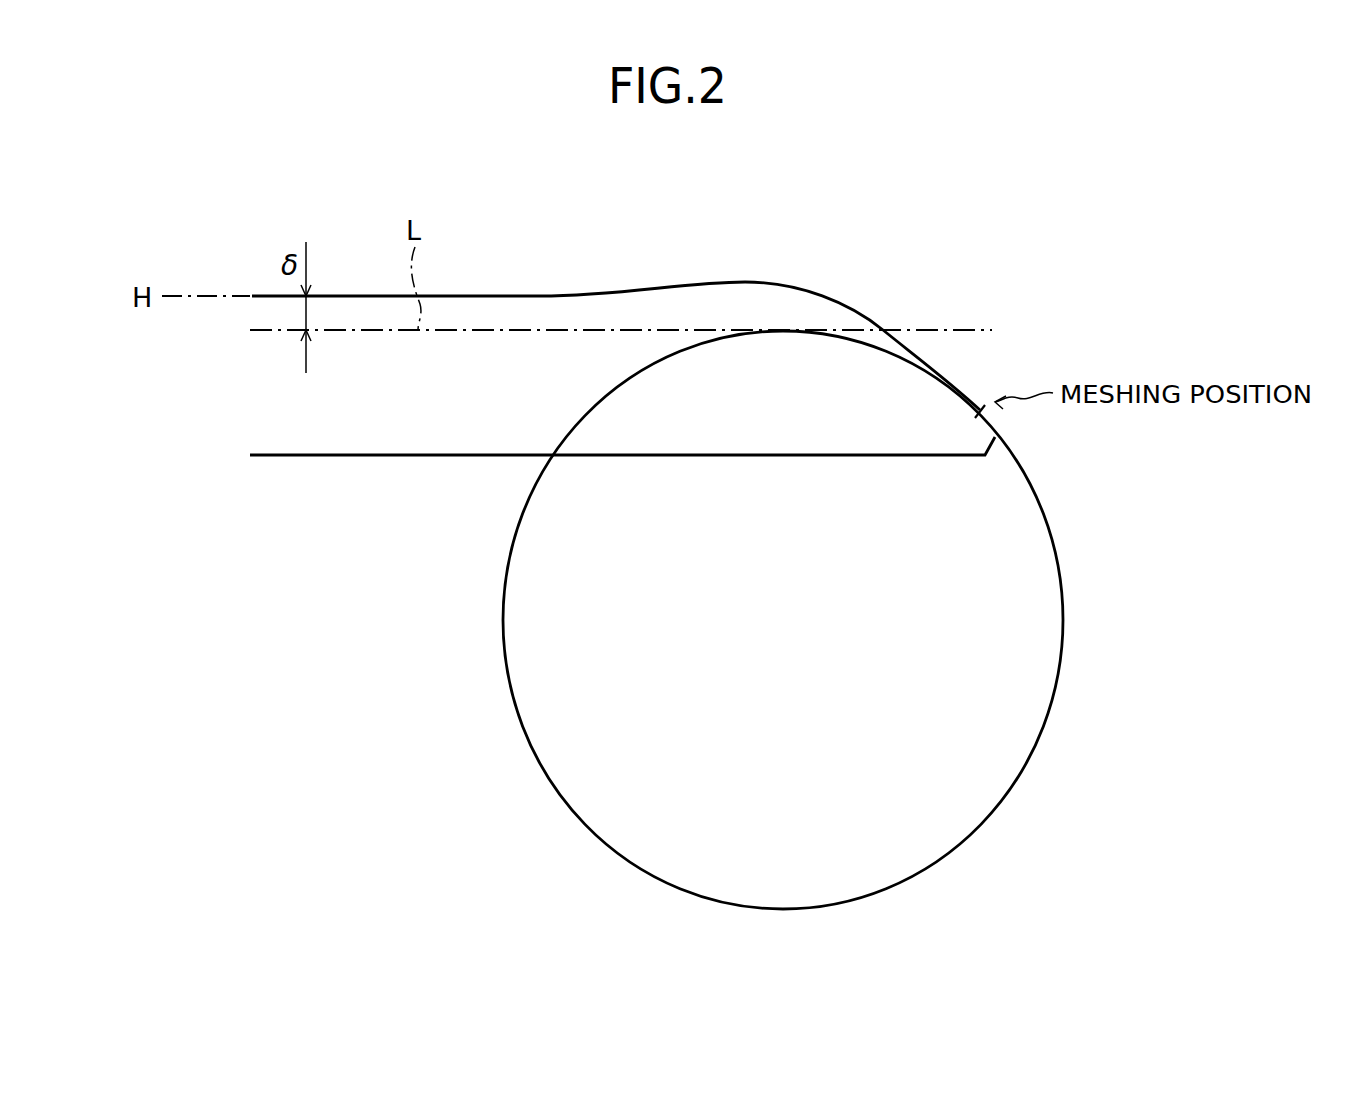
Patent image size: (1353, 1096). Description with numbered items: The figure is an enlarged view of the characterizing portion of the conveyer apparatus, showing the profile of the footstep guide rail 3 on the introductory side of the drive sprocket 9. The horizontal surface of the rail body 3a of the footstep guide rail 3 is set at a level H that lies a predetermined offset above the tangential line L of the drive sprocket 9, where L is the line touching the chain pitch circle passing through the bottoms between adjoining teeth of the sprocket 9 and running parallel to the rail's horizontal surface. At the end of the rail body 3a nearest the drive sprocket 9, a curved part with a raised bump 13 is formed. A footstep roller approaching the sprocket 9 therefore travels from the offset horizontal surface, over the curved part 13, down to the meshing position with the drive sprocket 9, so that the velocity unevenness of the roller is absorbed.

The raised bump 13 is at (742, 292).
The footstep guide rail 3 is at (622, 493).
The rail body 3a is at (360, 442).
The drive sprocket 9 is at (1040, 579).